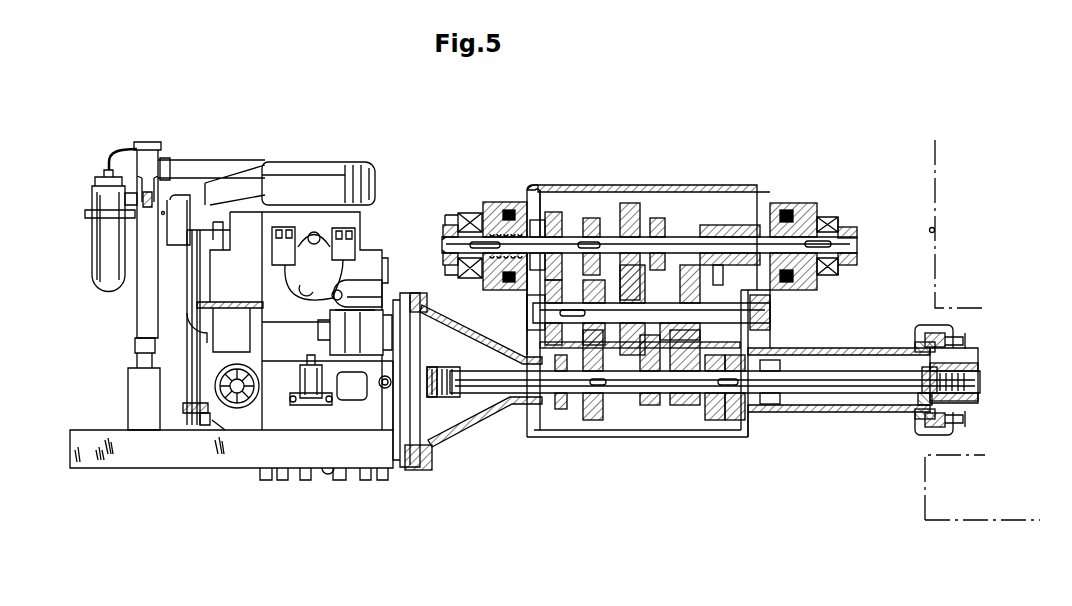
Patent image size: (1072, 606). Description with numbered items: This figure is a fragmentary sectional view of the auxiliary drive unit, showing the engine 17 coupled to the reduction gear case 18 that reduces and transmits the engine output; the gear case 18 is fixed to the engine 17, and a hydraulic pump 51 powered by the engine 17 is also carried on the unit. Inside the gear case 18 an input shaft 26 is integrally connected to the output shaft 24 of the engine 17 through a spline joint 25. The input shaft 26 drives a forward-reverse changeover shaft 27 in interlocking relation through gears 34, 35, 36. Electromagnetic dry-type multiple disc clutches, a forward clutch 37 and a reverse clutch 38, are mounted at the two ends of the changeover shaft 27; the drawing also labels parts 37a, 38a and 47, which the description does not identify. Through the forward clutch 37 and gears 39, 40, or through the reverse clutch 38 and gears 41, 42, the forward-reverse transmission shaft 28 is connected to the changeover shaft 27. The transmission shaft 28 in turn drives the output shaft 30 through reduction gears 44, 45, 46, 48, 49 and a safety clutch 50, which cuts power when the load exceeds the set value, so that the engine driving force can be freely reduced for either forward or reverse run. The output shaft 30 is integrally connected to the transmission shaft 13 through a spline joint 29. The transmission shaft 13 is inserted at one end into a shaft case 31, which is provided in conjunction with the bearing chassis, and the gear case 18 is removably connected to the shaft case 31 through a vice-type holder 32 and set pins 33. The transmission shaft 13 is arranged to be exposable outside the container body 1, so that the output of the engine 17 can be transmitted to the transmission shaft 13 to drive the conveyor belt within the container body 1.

The container body 1 is at (934, 229).
The transmission shaft 13 is at (980, 380).
The engine 17 is at (278, 218).
The reduction gear case 18 is at (760, 190).
The output shaft of the engine 24 is at (425, 472).
The spline joint 25 is at (448, 397).
The input shaft 26 is at (491, 397).
The forward-reverse changeover shaft 27 is at (858, 240).
The forward-reverse transmission shaft 28 is at (758, 305).
The spline joint 29 is at (924, 407).
The output shaft 30 is at (820, 393).
The shaft case 31 is at (977, 401).
The vice-type holder 32 is at (957, 327).
The set pins 33 is at (933, 340).
The gear 34 is at (607, 395).
The gear 35 is at (569, 395).
The gear 36 is at (591, 217).
The forward clutch 37 is at (507, 212).
The bearing cap 37a is at (467, 212).
The reverse clutch 38 is at (812, 203).
The bearing cap 38a is at (858, 210).
The gear 39 is at (554, 212).
The gear 40 is at (543, 395).
The gear 41 is at (745, 215).
The gear 42 is at (719, 280).
The reduction gear 44 is at (642, 400).
The reduction gear 45 is at (630, 203).
The reduction gear 46 is at (657, 217).
The gear 47 is at (665, 356).
The reduction gear 48 is at (691, 283).
The reduction gear 49 is at (690, 430).
The safety clutch 50 is at (715, 418).
The hydraulic pump 51 is at (197, 418).